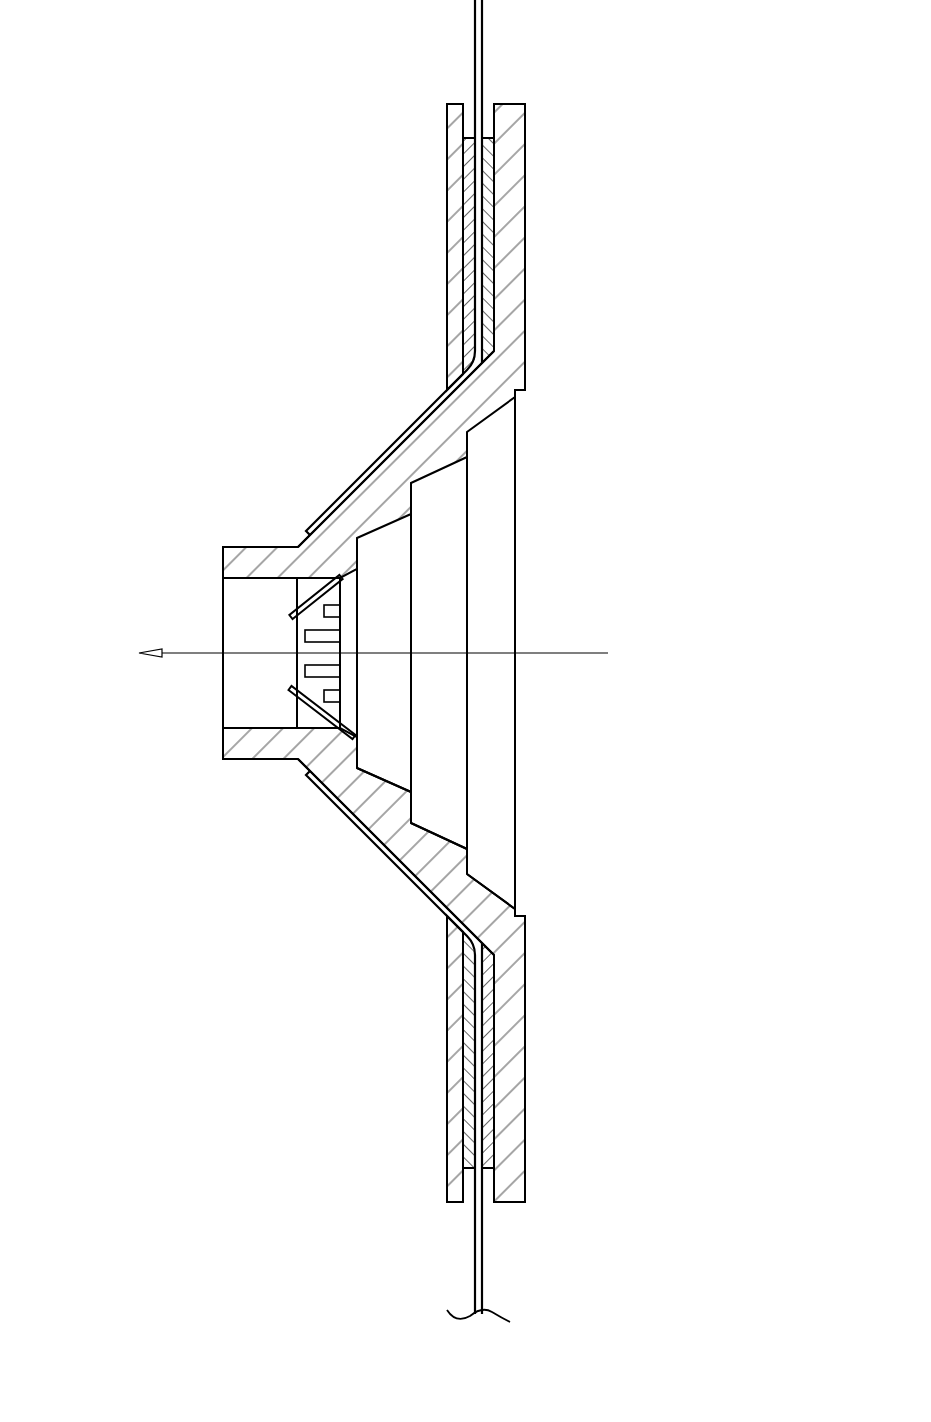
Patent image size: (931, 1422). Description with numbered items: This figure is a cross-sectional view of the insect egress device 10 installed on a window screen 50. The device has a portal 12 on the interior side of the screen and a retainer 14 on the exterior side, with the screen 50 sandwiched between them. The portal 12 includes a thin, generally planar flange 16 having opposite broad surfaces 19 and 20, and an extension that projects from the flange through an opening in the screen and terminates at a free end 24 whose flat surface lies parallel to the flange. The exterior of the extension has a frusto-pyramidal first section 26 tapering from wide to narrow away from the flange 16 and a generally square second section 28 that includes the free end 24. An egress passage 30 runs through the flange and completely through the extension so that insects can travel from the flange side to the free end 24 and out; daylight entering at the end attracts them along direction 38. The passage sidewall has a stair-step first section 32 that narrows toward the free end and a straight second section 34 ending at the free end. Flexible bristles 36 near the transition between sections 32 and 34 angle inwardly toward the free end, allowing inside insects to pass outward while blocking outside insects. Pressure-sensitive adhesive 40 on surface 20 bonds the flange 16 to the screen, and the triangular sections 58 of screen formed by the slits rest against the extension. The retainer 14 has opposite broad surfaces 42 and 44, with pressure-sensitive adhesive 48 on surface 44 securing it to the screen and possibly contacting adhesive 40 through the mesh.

The insect egress device 10 is at (125, 297).
The portal 12 is at (527, 172).
The retainer 14 is at (447, 180).
The flange 16 is at (512, 290).
The broad surface 19 is at (525, 992).
The broad surface 20 is at (493, 1190).
The free end 24 is at (222, 567).
The first section 26 is at (377, 843).
The second section 28 is at (260, 546).
The egress passage 30 is at (492, 562).
The first section of the sidewall 32 is at (447, 838).
The second section of the sidewall 34 is at (260, 728).
The bristles 36 is at (327, 723).
The direction 38 is at (577, 652).
The pressure-sensitive adhesive 40 is at (485, 205).
The broad surface 42 is at (447, 1087).
The broad surface 44 is at (468, 1103).
The pressure-sensitive adhesive 48 is at (469, 223).
The window screen 50 is at (482, 45).
The triangular sections 58 is at (358, 475).